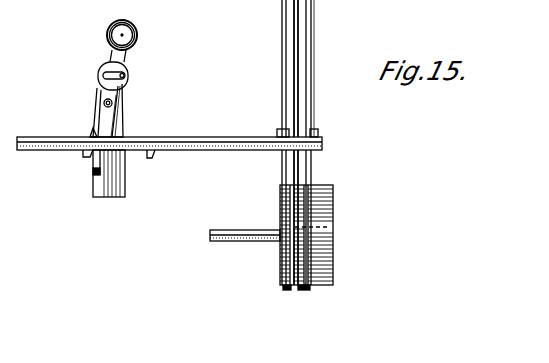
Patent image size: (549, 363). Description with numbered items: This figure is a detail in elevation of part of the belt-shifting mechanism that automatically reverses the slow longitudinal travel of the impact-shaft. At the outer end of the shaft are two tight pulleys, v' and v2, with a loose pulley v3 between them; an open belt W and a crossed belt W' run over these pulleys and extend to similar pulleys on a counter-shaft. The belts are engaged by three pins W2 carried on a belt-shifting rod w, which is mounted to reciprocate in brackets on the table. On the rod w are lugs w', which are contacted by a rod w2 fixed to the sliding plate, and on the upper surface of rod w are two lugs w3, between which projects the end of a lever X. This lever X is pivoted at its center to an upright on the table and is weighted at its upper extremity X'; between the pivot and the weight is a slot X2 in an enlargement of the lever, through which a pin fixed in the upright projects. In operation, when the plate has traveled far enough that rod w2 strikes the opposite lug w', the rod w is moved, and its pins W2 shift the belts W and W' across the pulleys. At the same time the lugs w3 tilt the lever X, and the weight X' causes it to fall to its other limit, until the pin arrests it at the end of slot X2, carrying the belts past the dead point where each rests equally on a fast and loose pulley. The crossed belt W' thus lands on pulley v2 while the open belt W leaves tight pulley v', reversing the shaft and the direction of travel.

The weighted upper extremity X' is at (133, 35).
The slot X2 is at (126, 76).
The lever X is at (121, 110).
The lugs w3 is at (96, 129).
The lugs w' is at (102, 165).
The rod w2 is at (97, 172).
The belt-shifting rod w is at (169, 131).
The open belt W is at (267, 142).
The pins W2 is at (294, 123).
The crossed belt W' is at (329, 142).
The tight pulley v2 is at (328, 233).
The tight pulley v' is at (246, 258).
The loose pulley v3 is at (298, 287).